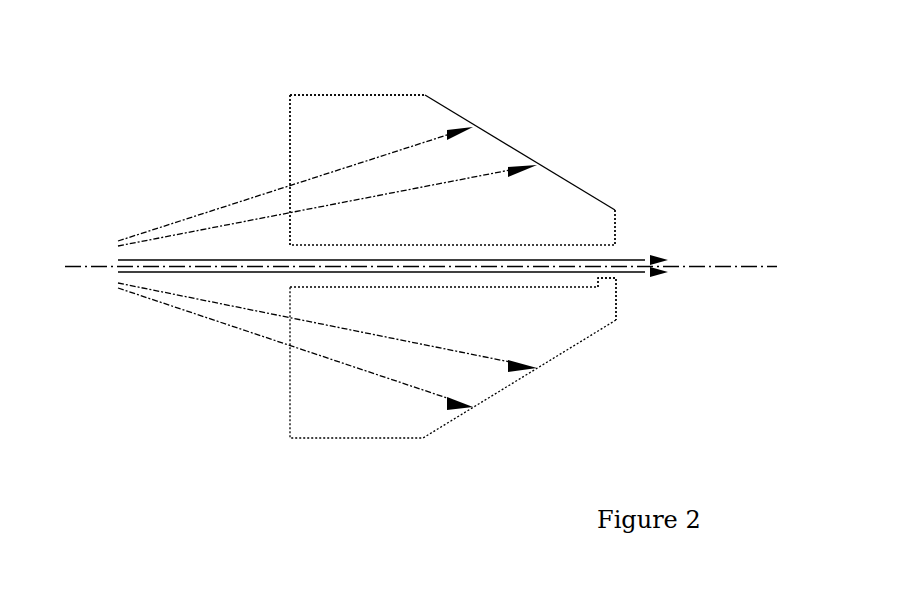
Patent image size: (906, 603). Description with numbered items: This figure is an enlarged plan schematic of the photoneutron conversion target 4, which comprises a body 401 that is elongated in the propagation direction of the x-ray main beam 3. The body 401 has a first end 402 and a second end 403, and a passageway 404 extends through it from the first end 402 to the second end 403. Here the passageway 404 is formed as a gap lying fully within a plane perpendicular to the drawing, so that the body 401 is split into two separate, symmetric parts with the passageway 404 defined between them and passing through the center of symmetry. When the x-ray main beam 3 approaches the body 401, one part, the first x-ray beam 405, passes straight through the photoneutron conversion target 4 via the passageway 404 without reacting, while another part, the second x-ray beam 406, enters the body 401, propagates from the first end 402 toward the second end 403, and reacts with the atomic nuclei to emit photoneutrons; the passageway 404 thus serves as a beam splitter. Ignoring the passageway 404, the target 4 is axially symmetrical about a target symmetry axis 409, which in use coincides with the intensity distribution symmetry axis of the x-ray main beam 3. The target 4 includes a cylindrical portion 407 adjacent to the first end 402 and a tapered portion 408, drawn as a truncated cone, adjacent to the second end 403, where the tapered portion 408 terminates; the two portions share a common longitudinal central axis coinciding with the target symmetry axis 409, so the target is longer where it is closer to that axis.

The x-ray main beam 3 is at (125, 225).
The photoneutron conversion target 4 is at (495, 78).
The body 401 is at (372, 147).
The first end 402 is at (288, 162).
The second end 403 is at (616, 232).
The passageway 404 is at (617, 282).
The first x-ray beam 405 is at (623, 273).
The second x-ray beam 406 is at (355, 367).
The cylindrical portion 407 is at (343, 95).
The tapered portion 408 is at (563, 182).
The target symmetry axis 409 is at (723, 266).